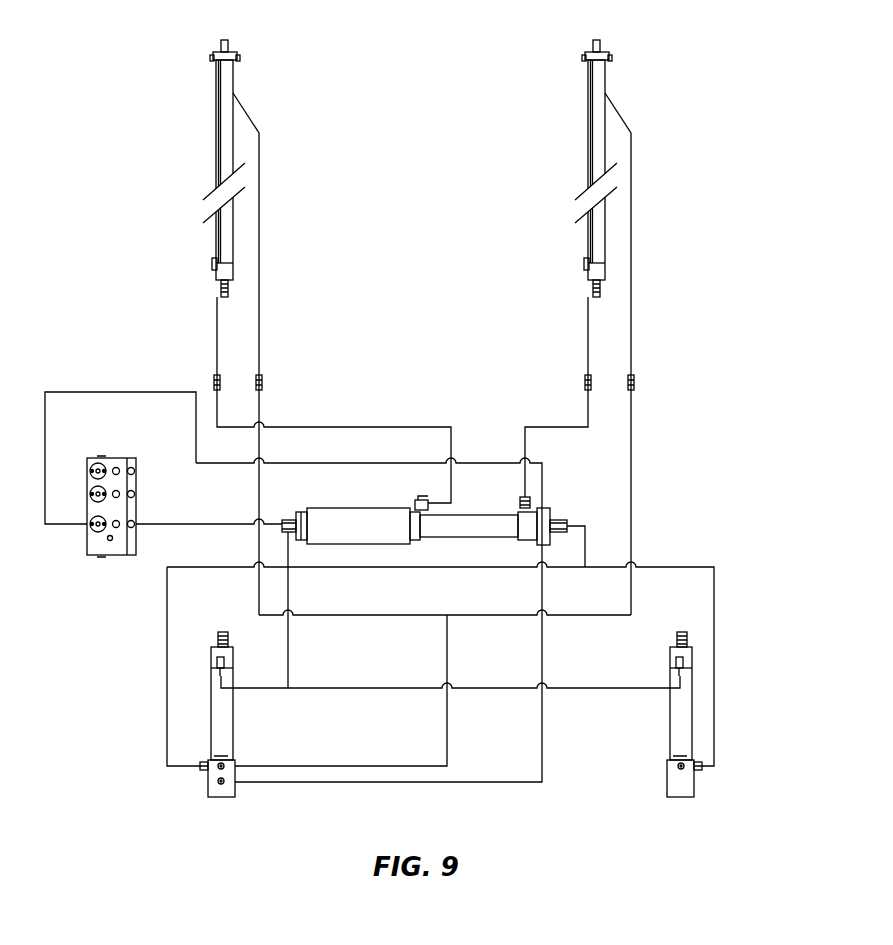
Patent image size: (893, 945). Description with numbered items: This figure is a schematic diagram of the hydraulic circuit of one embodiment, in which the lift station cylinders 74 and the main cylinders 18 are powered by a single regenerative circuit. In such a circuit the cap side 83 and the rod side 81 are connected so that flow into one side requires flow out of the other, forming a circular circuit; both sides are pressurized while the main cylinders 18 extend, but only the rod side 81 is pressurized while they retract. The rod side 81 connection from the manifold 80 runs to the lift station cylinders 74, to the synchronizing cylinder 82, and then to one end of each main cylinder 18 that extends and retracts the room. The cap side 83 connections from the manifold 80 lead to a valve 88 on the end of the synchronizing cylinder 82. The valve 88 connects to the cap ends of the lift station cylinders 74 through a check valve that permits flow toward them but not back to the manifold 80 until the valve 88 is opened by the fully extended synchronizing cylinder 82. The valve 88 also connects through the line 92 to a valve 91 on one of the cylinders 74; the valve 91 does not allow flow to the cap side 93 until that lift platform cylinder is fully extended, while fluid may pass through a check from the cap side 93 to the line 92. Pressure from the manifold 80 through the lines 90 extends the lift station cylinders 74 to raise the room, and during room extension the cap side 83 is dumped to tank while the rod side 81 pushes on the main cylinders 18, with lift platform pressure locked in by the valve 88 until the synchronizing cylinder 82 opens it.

The main cylinder 18 is at (226, 80).
The lift station cylinder 74 is at (216, 724).
The manifold 80 is at (123, 458).
The rod side 81 is at (216, 322).
The synchronizing cylinder 82 is at (369, 515).
The cap side 83 is at (146, 392).
The valve 88 is at (549, 512).
The lines 90 is at (167, 636).
The valve 91 is at (218, 797).
The line 92 is at (396, 783).
The cap side 93 is at (262, 194).